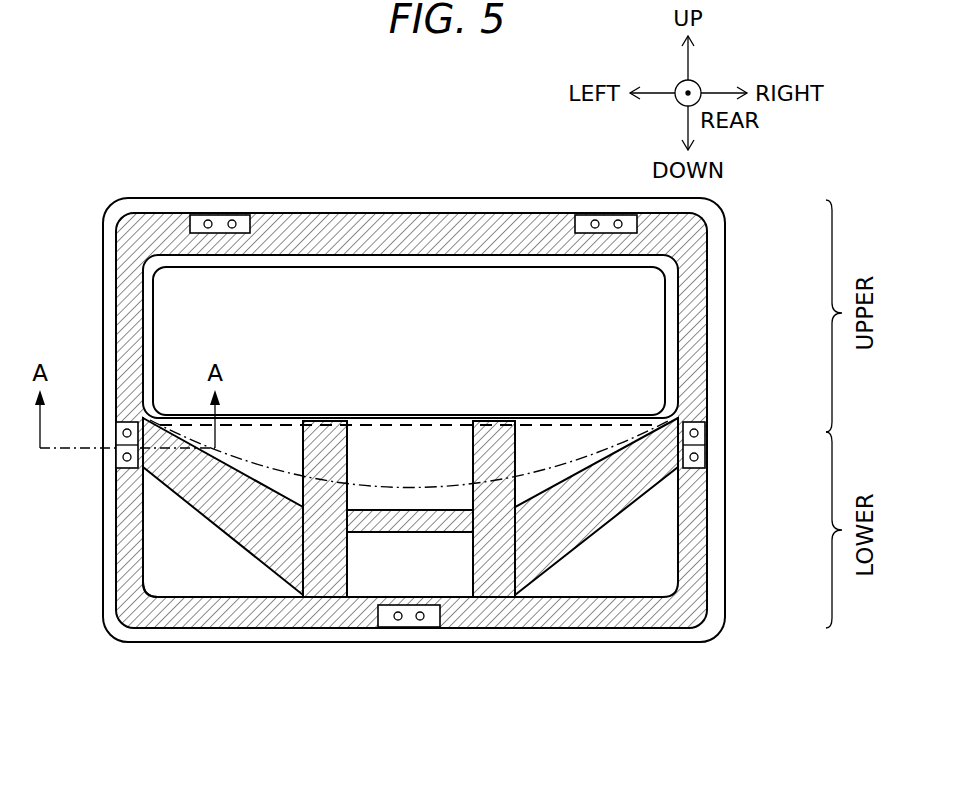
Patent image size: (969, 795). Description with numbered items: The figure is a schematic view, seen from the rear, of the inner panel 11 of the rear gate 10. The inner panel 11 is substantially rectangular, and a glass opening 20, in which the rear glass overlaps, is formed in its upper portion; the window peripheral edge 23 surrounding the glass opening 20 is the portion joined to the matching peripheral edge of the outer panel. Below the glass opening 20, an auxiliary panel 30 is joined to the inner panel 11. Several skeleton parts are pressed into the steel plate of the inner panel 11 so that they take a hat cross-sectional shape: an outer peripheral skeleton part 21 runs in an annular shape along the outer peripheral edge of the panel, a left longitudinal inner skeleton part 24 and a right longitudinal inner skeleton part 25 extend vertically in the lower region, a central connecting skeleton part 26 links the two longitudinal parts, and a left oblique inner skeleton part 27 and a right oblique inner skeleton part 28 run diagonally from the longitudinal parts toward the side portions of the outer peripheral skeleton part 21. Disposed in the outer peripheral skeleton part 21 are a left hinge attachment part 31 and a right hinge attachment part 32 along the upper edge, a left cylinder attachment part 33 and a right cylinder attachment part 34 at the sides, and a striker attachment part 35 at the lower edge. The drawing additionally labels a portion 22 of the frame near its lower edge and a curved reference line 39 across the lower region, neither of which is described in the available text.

The rear gate 10 is at (408, 172).
The inner panel 11 is at (298, 198).
The glass opening 20 is at (172, 318).
The outer peripheral skeleton part 21 is at (123, 575).
The lower opening 22 is at (113, 618).
The window peripheral edge 23 is at (405, 425).
The left longitudinal inner skeleton part 24 is at (323, 545).
The right longitudinal inner skeleton part 25 is at (493, 552).
The central connecting skeleton part 26 is at (462, 518).
The left oblique inner skeleton part 27 is at (227, 533).
The right oblique inner skeleton part 28 is at (577, 538).
The auxiliary panel 30 is at (557, 450).
The left hinge attachment part 31 is at (221, 214).
The right hinge attachment part 32 is at (575, 213).
The left cylinder attachment part 33 is at (116, 478).
The right cylinder attachment part 34 is at (703, 458).
The striker attachment part 35 is at (408, 628).
The curved bead 39 is at (275, 462).